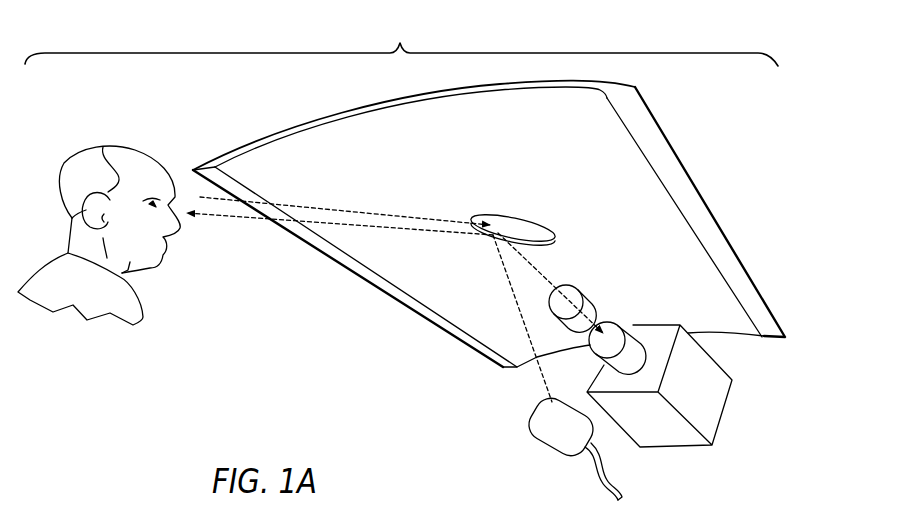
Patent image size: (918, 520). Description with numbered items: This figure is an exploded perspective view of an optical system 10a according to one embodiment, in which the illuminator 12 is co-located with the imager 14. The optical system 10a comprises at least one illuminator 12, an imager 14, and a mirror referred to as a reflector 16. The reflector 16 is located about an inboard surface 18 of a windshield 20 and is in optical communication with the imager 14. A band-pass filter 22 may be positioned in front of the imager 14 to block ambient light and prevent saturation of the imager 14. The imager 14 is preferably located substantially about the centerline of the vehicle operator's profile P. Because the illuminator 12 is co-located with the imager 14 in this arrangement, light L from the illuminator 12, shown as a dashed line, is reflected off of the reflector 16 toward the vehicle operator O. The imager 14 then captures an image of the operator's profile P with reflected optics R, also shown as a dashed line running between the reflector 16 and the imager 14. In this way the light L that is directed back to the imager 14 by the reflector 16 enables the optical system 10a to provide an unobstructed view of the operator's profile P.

The optical system 10a is at (401, 42).
The illuminator 12 is at (545, 423).
The imager 14 is at (714, 414).
The reflector 16 is at (516, 226).
The inboard surface 18 is at (438, 156).
The windshield 20 is at (703, 183).
The band-pass filter 22 is at (590, 293).
The vehicle operator O is at (66, 140).
The operator's profile P is at (194, 243).
The reflected optics R is at (547, 273).
The light L is at (517, 308).